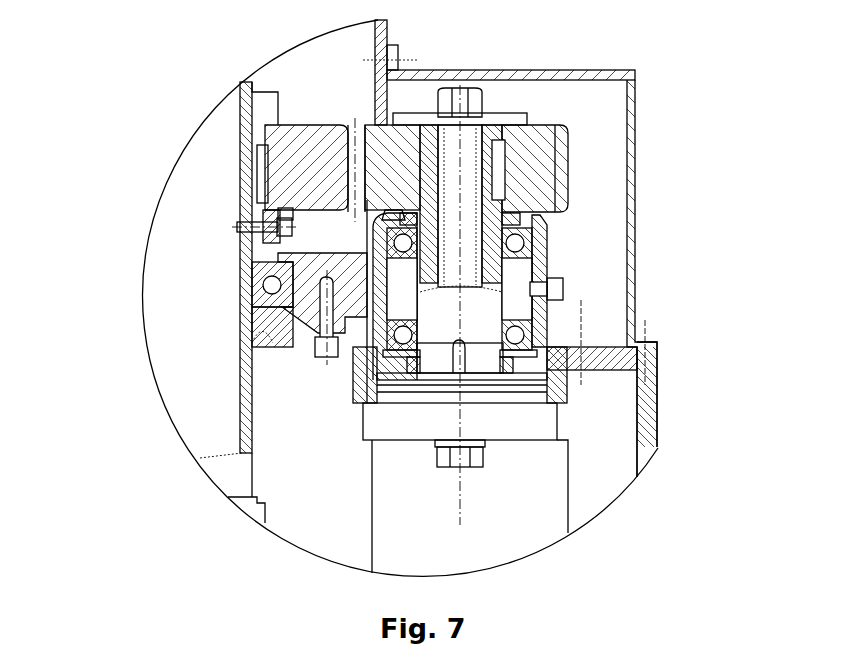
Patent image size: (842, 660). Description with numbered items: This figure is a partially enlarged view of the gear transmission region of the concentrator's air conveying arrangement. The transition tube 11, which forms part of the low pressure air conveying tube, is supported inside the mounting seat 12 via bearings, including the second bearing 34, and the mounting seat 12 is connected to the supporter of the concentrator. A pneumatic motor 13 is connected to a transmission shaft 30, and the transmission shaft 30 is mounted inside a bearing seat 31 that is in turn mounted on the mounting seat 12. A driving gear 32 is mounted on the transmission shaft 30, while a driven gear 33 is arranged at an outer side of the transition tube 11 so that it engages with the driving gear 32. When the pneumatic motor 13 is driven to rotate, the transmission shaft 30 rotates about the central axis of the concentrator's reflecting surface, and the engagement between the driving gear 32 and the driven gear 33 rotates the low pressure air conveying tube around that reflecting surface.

The transition tube 11 is at (240, 367).
The mounting seat 12 is at (655, 430).
The pneumatic motor 13 is at (547, 508).
The transmission shaft 30 is at (487, 298).
The bearing seat 31 is at (535, 225).
The driving gear 32 is at (570, 142).
The driven gear 33 is at (293, 193).
The second bearing 34 is at (243, 263).